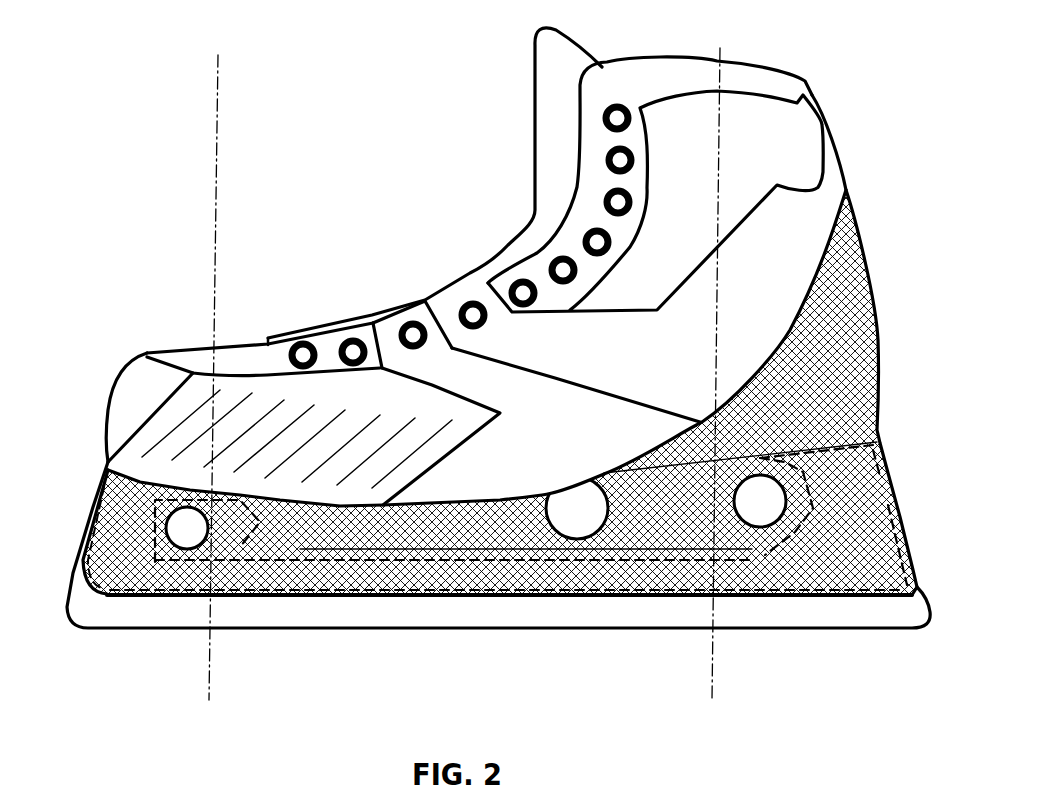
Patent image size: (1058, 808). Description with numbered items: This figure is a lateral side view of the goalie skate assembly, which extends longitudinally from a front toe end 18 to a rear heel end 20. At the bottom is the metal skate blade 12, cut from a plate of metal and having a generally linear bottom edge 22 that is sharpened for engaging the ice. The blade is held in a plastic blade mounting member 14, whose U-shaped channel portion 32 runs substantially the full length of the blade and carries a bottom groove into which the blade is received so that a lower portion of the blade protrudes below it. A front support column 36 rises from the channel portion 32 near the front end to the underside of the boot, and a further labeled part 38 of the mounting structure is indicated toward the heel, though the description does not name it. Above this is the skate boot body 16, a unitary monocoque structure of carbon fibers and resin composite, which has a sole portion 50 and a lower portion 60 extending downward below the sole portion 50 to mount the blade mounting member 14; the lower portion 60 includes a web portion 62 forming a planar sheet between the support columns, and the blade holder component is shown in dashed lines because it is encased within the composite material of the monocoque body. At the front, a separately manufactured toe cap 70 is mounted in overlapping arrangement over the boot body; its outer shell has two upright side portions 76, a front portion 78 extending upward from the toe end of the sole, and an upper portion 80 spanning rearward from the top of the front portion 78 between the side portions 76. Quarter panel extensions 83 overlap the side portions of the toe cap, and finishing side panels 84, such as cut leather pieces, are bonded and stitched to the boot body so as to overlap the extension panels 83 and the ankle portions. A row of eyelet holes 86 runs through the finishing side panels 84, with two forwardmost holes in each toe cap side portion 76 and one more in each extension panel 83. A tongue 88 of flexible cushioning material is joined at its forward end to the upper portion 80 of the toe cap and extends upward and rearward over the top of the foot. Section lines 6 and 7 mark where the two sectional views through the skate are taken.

The metal skate blade 12 is at (452, 617).
The blade mounting member 14 is at (397, 560).
The skate boot body 16 is at (887, 253).
The front toe end 18 is at (97, 324).
The rear heel end 20 is at (883, 148).
The bottom edge 22 is at (547, 624).
The channel portion 32 is at (634, 565).
The front support column 36 is at (97, 500).
The crosshatched sole body 38 is at (898, 530).
The sole portion 50 is at (720, 458).
The lower portion 60 is at (887, 473).
The web portion 62 is at (345, 529).
The toe cap 70 is at (166, 307).
The side portions 76 is at (260, 400).
The front portion 78 is at (120, 402).
The upper portion 80 is at (179, 356).
The quarter panel extensions 83 is at (387, 332).
The finishing side panels 84 is at (766, 116).
The eyelet holes 86 is at (562, 268).
The tongue 88 is at (530, 83).
The line 6- 6 is at (212, 381).
The line 7- 7 is at (716, 378).